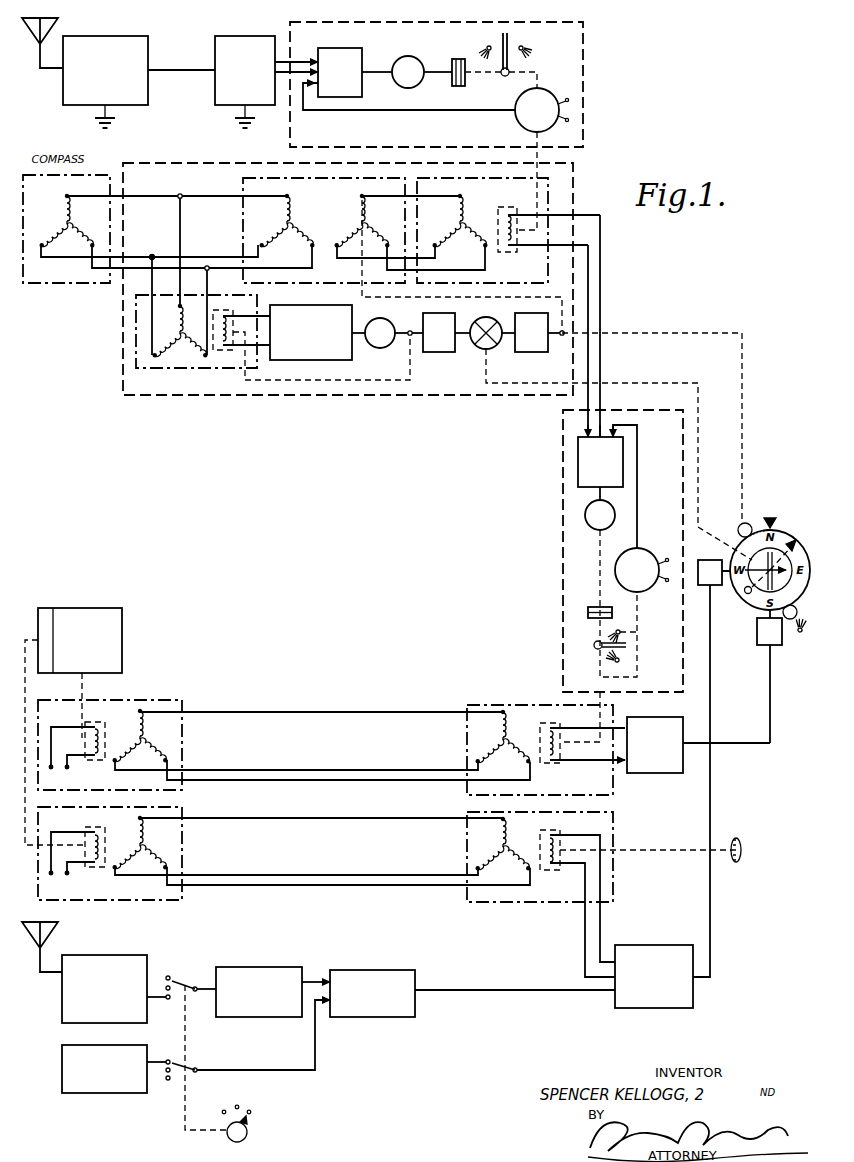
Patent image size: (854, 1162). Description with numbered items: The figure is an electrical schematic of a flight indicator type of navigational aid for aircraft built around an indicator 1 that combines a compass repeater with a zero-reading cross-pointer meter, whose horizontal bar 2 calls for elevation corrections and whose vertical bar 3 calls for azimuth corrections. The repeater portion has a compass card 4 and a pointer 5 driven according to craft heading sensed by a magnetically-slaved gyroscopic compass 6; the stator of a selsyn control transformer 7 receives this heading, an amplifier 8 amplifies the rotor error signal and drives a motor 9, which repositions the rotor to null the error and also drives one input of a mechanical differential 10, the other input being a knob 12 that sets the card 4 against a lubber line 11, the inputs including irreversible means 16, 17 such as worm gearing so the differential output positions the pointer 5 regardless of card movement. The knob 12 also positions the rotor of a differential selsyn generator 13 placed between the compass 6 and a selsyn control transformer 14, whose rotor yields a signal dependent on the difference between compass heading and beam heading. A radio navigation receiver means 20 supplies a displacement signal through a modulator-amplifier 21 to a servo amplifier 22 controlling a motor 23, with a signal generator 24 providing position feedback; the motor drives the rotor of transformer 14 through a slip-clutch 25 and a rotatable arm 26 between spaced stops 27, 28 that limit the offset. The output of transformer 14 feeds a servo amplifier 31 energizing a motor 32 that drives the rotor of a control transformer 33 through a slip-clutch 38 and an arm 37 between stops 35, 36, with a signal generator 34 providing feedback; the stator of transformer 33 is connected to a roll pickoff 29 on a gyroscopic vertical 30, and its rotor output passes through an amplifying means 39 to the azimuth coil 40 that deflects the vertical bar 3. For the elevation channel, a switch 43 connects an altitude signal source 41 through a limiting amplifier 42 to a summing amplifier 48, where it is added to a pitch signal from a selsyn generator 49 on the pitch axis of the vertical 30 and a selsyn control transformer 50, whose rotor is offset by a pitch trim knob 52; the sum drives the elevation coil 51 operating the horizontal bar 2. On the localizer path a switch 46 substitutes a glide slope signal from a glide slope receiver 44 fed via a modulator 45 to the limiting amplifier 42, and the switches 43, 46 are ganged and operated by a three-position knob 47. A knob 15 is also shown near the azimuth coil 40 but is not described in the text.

The indicator 1 is at (746, 522).
The horizontal pointer or bar 2 is at (796, 542).
The vertical pointer or bar 3 is at (766, 598).
The compass card 4 is at (786, 540).
The pointer 5 is at (748, 594).
The compass 6 is at (60, 283).
The selsyn control transformer 7 is at (152, 368).
The amplifier 8 is at (295, 360).
The motor 9 is at (384, 348).
The mechanical differential 10 is at (480, 318).
The lubber line 11 is at (774, 519).
The knob 12 is at (802, 636).
The differential selsyn generator 13 is at (244, 191).
The selsyn control transformer 14 is at (548, 186).
The knob 15 is at (793, 620).
The irreversible means 16 is at (424, 318).
The irreversible means 17 is at (520, 321).
The radio navigation receiver means 20 is at (132, 36).
The modulator-amplifier 21 is at (250, 36).
The servo amplifier 22 is at (354, 46).
The motor 23 is at (416, 56).
The signal generator 24 is at (528, 124).
The slip-clutch 25 is at (458, 59).
The rotatable arm 26 is at (510, 36).
The stop 27 is at (487, 40).
The stop 28 is at (521, 52).
The roll pickoff 29 is at (154, 700).
The gyroscopic vertical 30 is at (83, 608).
The servo amplifier 31 is at (578, 454).
The motor 32 is at (585, 519).
The control transformer 33 is at (494, 704).
The signal generator 34 is at (645, 548).
The stop 35 is at (628, 634).
The stop 36 is at (619, 662).
The rotatable arm 37 is at (626, 645).
The slip-clutch 38 is at (590, 607).
The amplifying means 39 is at (658, 773).
The azimuth coil 40 is at (757, 632).
The source of alternating current signal 41 is at (102, 1093).
The limiting amplifier 42 is at (370, 970).
The switch 43 is at (160, 1052).
The glide slope receiver 44 is at (108, 955).
The modulator 45 is at (252, 967).
The switch 46 is at (162, 972).
The three-position knob 47 is at (248, 1137).
The summing amplifier 48 is at (645, 1008).
The selsyn generator 49 is at (182, 808).
The selsyn control transformer 50 is at (613, 885).
The elevation coil 51 is at (714, 561).
The pitch trim knob 52 is at (740, 838).